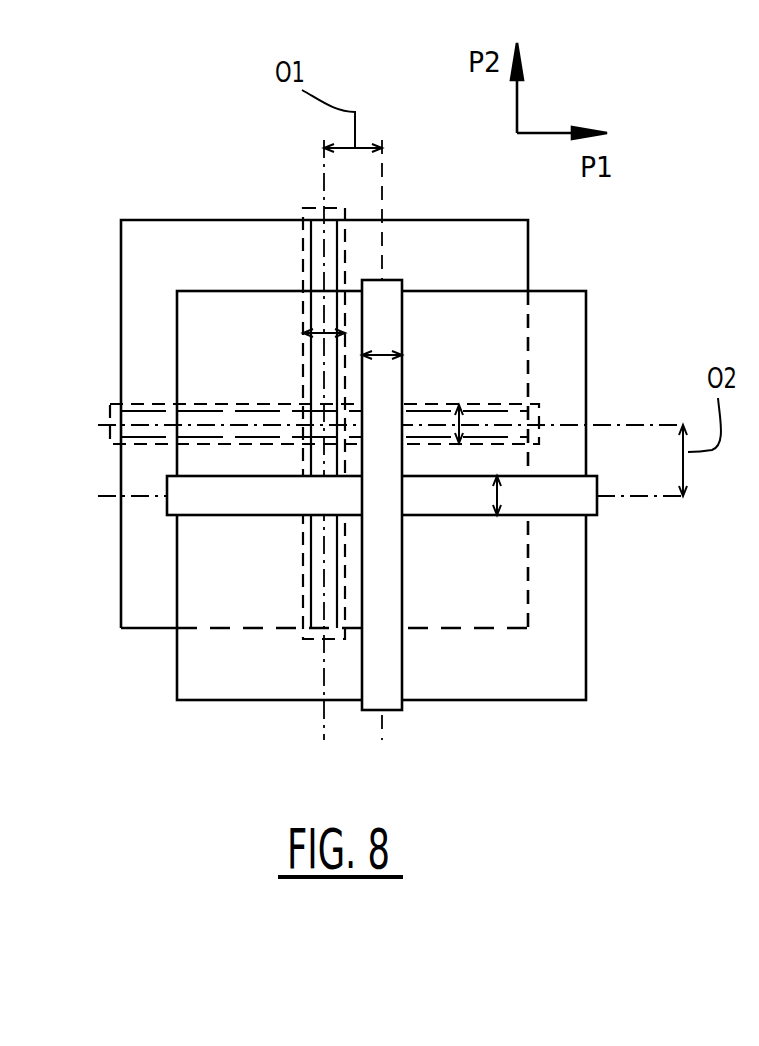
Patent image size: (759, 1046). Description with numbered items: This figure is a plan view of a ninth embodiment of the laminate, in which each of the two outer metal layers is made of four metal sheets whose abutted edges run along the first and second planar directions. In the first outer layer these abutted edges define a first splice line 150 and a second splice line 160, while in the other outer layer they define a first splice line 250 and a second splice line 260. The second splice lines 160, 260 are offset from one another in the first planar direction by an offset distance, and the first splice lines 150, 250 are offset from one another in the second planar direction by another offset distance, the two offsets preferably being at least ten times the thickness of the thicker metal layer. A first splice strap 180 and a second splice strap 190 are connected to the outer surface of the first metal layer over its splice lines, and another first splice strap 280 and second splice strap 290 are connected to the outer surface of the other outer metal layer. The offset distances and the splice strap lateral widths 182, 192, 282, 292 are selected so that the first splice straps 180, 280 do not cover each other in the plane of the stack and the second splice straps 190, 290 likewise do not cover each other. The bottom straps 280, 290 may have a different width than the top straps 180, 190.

The first splice line 150 is at (660, 497).
The first splice line 250 is at (658, 423).
The second splice line 160 is at (383, 180).
The second splice line 260 is at (323, 175).
The first splice strap 180 is at (538, 504).
The splice strap lateral width 182 is at (507, 497).
The second splice strap 190 is at (385, 298).
The splice strap lateral width 192 is at (380, 348).
The first splice strap 280 is at (538, 430).
The splice strap lateral width 282 is at (465, 420).
The second splice strap 290 is at (318, 213).
The splice strap lateral width 292 is at (322, 336).